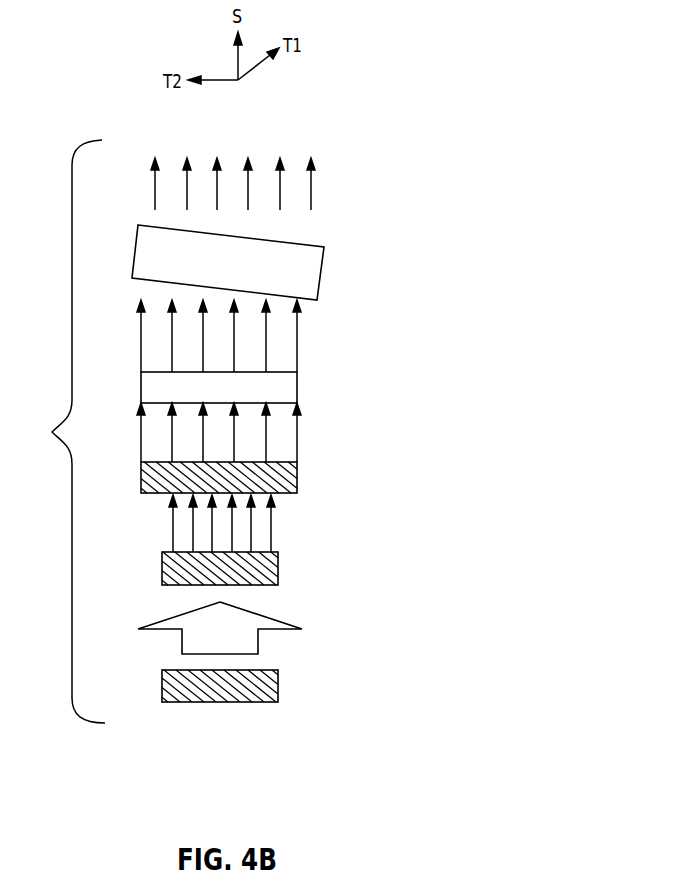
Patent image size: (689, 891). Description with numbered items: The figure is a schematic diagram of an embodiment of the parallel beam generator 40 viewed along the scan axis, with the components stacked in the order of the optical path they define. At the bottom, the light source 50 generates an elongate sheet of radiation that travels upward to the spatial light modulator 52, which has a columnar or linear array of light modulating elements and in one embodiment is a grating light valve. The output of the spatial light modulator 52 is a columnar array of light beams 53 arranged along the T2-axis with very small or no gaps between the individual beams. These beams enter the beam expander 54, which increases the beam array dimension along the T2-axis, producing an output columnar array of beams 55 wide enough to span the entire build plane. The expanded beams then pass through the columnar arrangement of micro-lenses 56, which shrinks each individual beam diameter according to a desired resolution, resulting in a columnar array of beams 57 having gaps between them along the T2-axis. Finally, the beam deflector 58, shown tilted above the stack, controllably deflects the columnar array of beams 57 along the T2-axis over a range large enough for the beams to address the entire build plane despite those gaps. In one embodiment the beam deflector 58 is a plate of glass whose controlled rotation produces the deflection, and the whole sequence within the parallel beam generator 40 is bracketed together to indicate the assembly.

The parallel beam generator 40 is at (66, 431).
The light source 50 is at (279, 686).
The spatial light modulator 52 is at (279, 568).
The columnar array of light beams 53 is at (272, 522).
The beam expander 54 is at (298, 478).
The output columnar array of beams 55 is at (298, 432).
The columnar arrangement of micro-lenses 56 is at (298, 387).
The columnar array of beams 57 is at (298, 336).
The beam deflector 58 is at (323, 274).